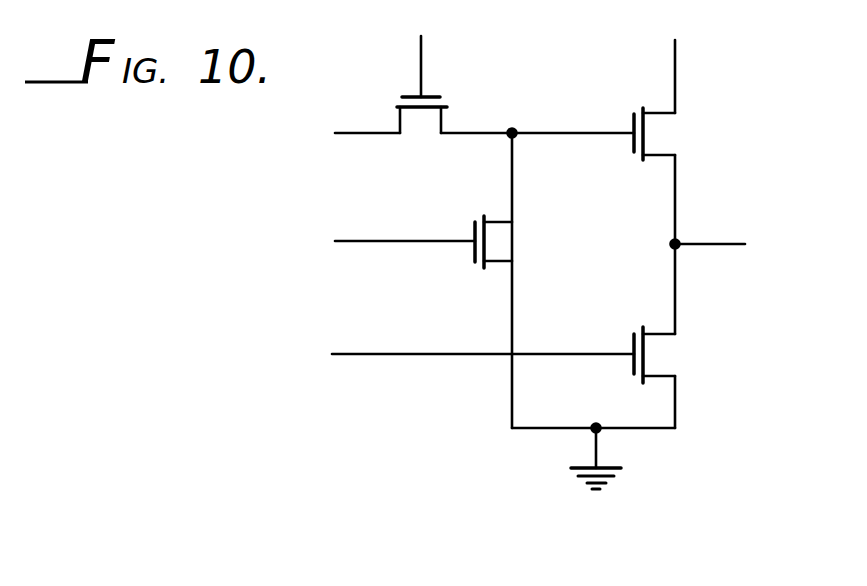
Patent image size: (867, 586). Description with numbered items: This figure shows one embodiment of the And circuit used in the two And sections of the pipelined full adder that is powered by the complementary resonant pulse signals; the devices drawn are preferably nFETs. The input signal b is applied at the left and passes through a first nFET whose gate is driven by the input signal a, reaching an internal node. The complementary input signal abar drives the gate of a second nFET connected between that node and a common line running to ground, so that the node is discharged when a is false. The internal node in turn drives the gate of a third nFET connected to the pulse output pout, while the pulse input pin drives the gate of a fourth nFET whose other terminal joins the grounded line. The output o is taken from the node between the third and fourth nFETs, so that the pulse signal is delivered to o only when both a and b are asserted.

The input signal a is at (422, 69).
The input signal b is at (350, 134).
The complementary input signal a-bar abar is at (322, 222).
The pulse output P_out pout is at (674, 82).
The pulse input P_in pin is at (479, 355).
The output O o is at (720, 244).